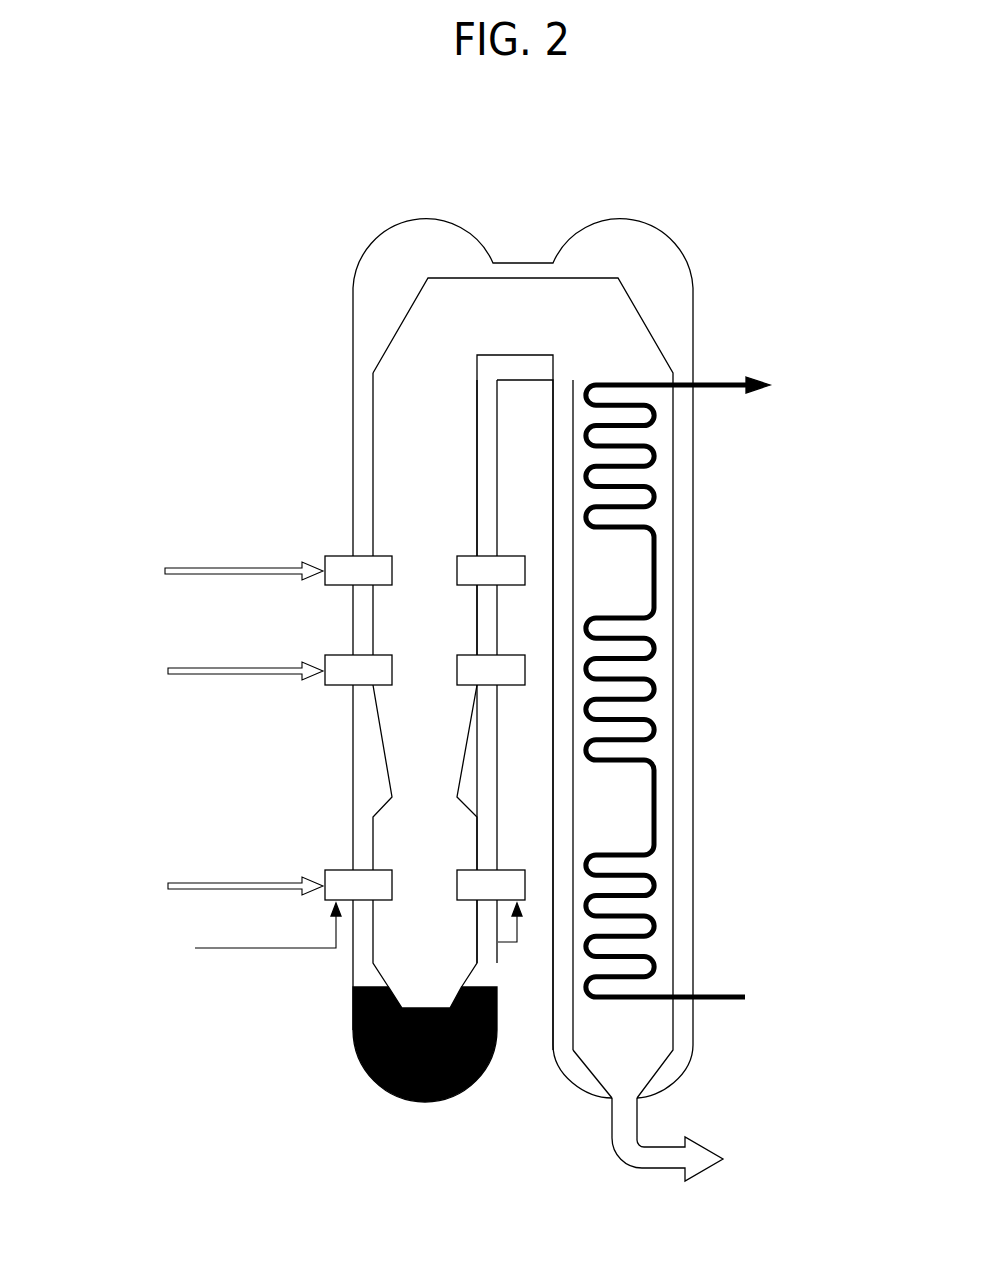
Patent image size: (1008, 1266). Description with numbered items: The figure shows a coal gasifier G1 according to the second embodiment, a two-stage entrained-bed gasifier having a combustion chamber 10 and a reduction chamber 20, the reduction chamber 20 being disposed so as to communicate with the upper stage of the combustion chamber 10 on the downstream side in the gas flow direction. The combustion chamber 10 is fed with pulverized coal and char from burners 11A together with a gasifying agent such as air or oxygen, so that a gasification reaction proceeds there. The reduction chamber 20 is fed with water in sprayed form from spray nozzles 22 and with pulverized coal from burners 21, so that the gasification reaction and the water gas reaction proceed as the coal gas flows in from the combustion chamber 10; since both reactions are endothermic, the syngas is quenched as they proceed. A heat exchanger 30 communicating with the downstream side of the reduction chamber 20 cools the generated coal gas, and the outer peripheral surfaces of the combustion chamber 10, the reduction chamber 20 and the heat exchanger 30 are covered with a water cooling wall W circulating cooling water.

The coal gasifier G1 is at (697, 168).
The water cooling wall W is at (355, 421).
The reduction chamber 20 is at (420, 465).
The spray nozzles 22 is at (330, 555).
The burners 21 is at (330, 655).
The burners 11A is at (383, 870).
The combustion chamber 10 is at (392, 963).
The heat exchanger 30 is at (660, 512).